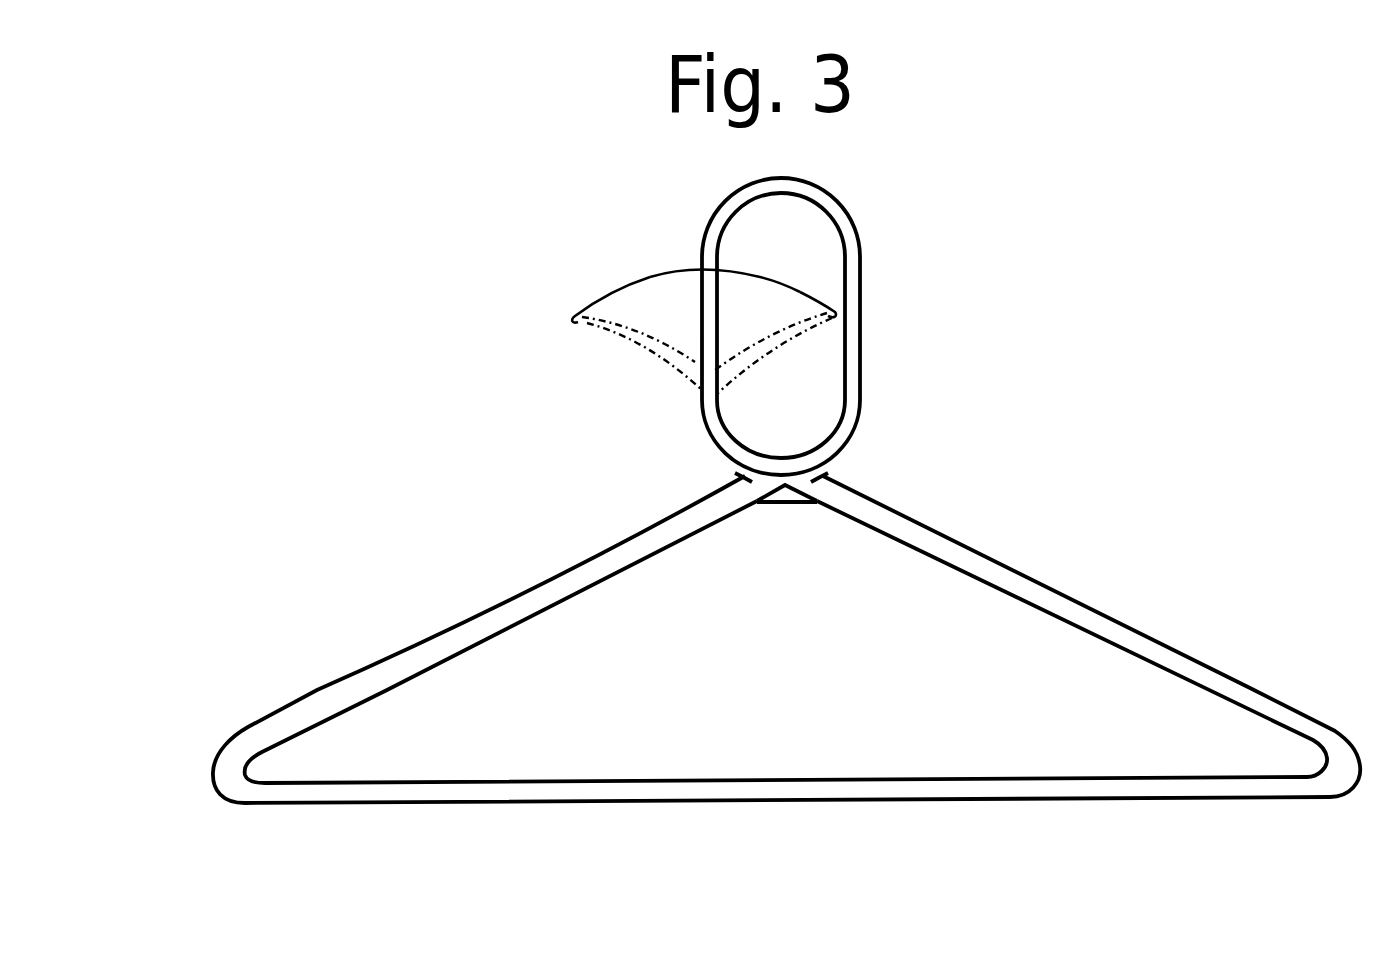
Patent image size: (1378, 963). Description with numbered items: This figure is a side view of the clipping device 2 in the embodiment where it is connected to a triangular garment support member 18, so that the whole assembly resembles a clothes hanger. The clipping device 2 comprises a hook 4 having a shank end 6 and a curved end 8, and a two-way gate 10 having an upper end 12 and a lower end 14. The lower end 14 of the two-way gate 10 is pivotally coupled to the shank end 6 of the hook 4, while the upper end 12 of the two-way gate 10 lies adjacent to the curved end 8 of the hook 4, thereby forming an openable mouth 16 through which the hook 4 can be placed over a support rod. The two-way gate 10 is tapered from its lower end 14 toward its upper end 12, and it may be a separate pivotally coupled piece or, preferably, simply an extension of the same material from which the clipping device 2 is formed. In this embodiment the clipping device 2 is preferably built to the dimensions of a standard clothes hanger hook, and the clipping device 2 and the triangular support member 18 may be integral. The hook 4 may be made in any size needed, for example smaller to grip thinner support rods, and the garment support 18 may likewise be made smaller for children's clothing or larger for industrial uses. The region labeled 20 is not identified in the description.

The clipping device 2 is at (846, 203).
The hook 4 is at (866, 313).
The shank end 6 is at (862, 415).
The curved end 8 is at (705, 220).
The two-way gate 10 is at (695, 360).
The upper end 12 is at (570, 318).
The lower end 14 is at (703, 440).
The openable mouth 16 is at (770, 273).
The triangular garment support member 18 is at (1104, 607).
The hook-body junction 20 is at (836, 472).